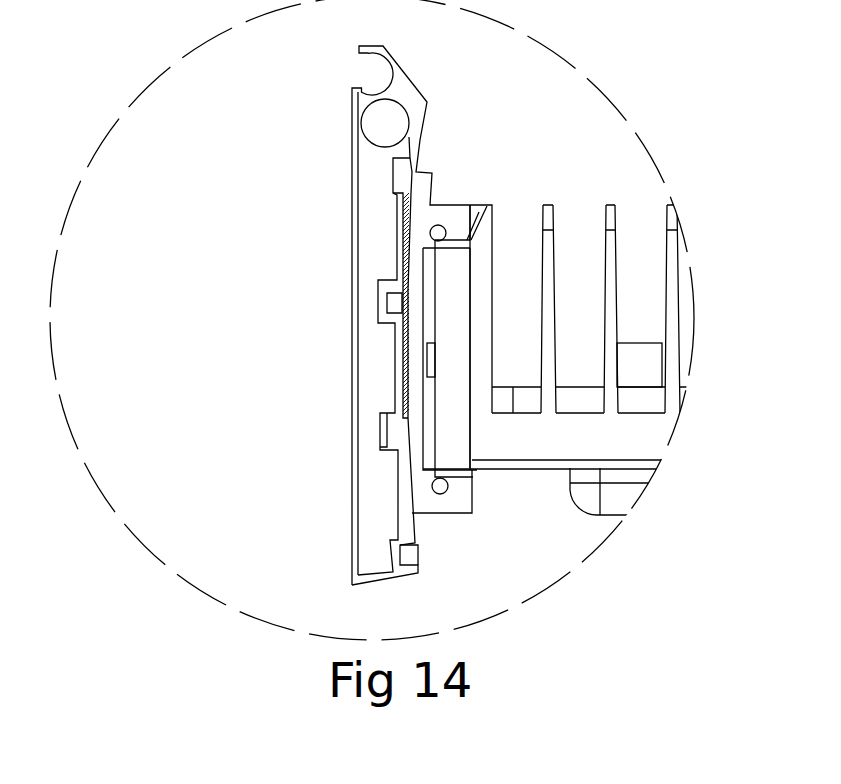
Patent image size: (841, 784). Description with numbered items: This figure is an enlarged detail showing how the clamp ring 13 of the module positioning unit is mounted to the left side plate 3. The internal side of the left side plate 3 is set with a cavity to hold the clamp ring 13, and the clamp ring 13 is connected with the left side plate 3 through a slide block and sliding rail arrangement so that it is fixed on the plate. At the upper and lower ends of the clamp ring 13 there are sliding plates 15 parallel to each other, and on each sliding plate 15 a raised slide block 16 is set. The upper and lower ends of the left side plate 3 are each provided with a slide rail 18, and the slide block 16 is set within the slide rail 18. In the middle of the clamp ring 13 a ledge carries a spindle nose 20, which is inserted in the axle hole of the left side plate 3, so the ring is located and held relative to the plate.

The left side plate 3 is at (417, 327).
The clamp ring 13 is at (452, 310).
The sliding plate 15 is at (463, 240).
The slide block 16 is at (448, 235).
The slide rail 18 is at (433, 227).
The spindle nose 20 is at (430, 358).